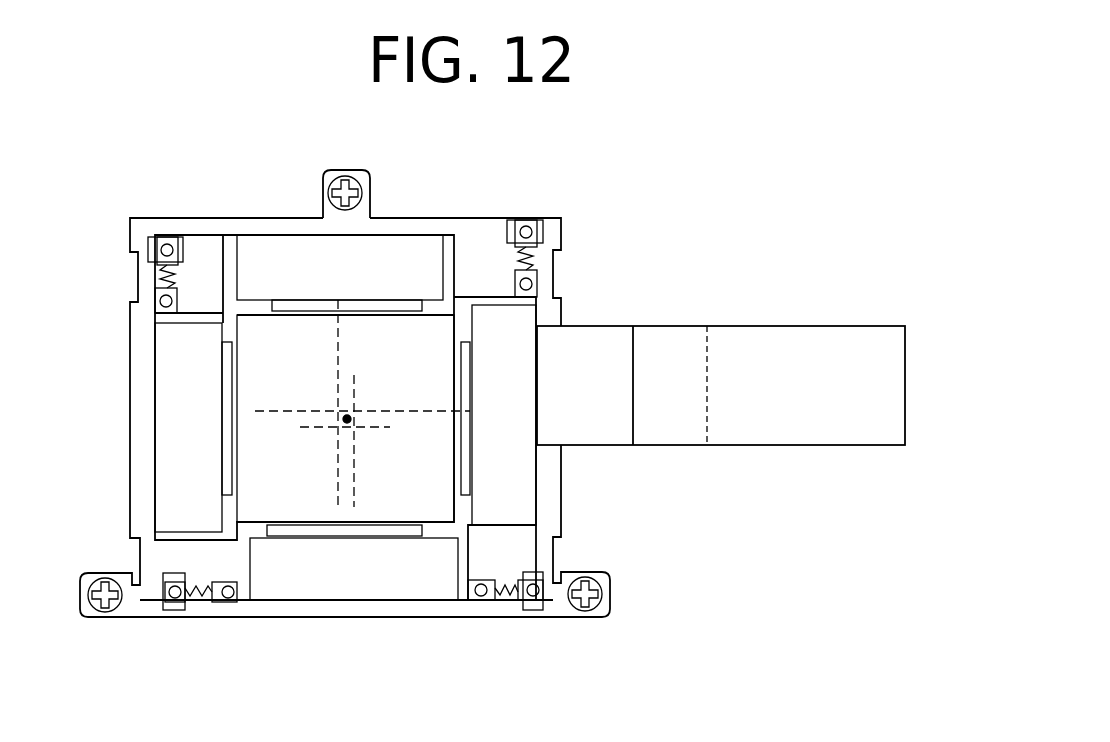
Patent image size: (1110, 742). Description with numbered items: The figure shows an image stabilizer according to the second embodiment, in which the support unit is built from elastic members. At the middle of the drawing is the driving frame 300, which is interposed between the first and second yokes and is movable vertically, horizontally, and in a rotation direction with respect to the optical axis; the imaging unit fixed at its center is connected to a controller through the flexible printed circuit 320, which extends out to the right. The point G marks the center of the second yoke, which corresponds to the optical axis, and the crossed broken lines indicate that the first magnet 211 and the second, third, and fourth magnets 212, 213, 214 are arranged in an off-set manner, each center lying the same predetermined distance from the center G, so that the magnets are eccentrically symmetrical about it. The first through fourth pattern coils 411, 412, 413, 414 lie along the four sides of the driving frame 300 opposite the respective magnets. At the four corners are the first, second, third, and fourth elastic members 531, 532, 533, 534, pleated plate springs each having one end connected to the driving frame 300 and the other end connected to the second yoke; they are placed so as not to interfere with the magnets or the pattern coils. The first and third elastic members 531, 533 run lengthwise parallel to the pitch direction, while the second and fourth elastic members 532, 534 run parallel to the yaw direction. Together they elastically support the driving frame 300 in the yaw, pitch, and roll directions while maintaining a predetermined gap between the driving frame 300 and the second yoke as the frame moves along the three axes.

The driving frame 300 is at (259, 528).
The flexible printed circuit 320 is at (795, 338).
The first pattern coil 411 is at (338, 221).
The first magnet 211 is at (277, 248).
The second pattern coil 412 is at (582, 415).
The second magnet 212 is at (520, 497).
The third pattern coil 413 is at (354, 611).
The third magnet 213 is at (369, 594).
The fourth pattern coil 414 is at (117, 427).
The fourth magnet 214 is at (173, 387).
The first elastic member 531 is at (175, 266).
The second elastic member 532 is at (522, 222).
The third elastic member 533 is at (505, 600).
The fourth elastic member 534 is at (203, 600).
The center of the second yoke G is at (344, 421).